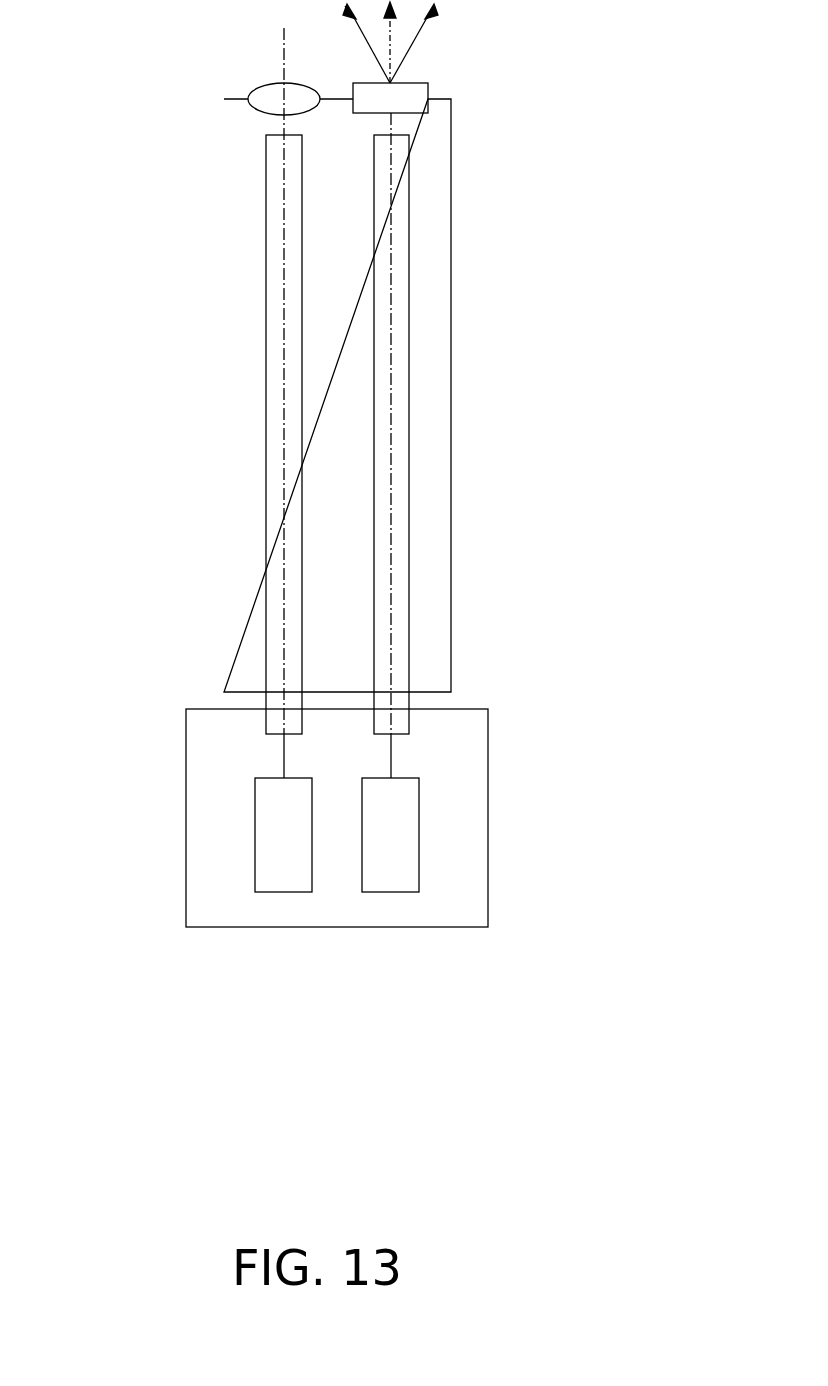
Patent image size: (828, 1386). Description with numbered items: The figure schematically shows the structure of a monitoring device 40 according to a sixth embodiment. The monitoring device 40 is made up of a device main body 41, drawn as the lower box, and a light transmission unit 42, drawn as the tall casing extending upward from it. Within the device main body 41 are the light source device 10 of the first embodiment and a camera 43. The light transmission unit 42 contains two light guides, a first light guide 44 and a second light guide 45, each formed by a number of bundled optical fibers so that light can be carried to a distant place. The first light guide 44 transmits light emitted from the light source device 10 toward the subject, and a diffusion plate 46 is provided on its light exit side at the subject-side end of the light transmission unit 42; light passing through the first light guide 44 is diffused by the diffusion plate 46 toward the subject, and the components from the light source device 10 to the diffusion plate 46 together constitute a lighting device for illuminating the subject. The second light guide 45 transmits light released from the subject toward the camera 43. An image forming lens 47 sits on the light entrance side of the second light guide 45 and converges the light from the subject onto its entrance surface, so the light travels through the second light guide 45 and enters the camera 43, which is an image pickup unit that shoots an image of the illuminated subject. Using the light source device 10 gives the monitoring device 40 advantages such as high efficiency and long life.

The light source device 10 is at (419, 812).
The monitoring device 40 is at (560, 186).
The device main body 41 is at (488, 727).
The light transmission unit 42 is at (451, 346).
The camera 43 is at (256, 832).
The first light guide 44 is at (409, 300).
The second light guide 45 is at (266, 300).
The diffusion plate 46 is at (412, 82).
The image forming lens 47 is at (262, 85).